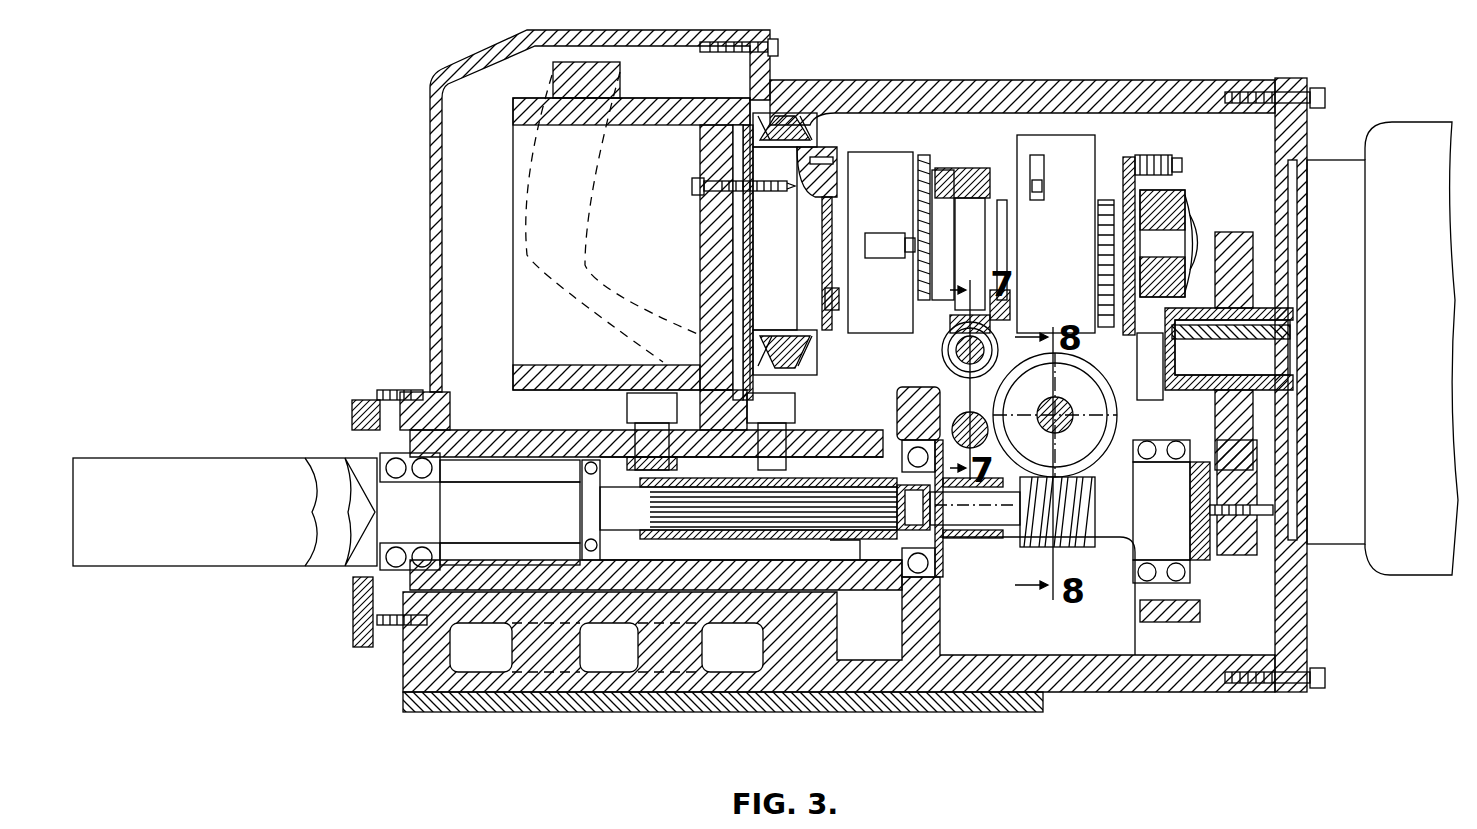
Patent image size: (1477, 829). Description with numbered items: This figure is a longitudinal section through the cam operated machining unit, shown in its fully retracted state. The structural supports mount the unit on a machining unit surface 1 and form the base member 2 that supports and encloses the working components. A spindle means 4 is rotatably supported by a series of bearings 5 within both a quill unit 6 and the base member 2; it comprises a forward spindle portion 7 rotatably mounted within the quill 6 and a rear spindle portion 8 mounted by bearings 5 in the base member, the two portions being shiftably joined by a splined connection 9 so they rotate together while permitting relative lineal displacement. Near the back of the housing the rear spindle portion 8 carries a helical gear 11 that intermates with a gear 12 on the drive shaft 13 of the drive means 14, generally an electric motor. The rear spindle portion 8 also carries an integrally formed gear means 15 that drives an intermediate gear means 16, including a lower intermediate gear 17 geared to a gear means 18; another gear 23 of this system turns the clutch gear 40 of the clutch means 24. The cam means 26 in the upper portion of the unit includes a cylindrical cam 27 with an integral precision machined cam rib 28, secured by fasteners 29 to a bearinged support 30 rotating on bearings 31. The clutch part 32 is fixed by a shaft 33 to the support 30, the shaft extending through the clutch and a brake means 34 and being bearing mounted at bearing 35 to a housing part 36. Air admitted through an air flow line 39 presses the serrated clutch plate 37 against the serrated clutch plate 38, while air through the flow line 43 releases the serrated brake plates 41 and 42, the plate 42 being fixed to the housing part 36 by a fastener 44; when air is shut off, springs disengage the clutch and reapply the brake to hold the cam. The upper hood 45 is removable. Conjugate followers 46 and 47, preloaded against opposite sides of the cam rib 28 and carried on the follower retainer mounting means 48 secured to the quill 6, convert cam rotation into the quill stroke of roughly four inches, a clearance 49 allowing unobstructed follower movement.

The machining unit surface 1 is at (645, 712).
The base member 2 is at (1100, 680).
The spindle means 4 is at (330, 578).
The bearings 5 is at (435, 552).
The quill unit 6 is at (540, 450).
The forward spindle portion 7 is at (500, 472).
The rear spindle portion 8 is at (1005, 545).
The splined connection 9 is at (648, 500).
The helical gear 11 is at (1228, 555).
The gear 12 is at (1230, 230).
The drive shaft 13 is at (1170, 362).
The drive means 14 is at (1375, 598).
The gear means 15 is at (1092, 545).
The intermediate gear means 16 is at (975, 395).
The lower intermediate gear 17 is at (1092, 375).
The gear means 18 is at (978, 428).
The gear 23 is at (945, 330).
The clutch means 24 is at (932, 172).
The cam means 26 is at (572, 211).
The cam 27 is at (513, 190).
The cam rib 28 is at (575, 80).
The fasteners 29 is at (692, 186).
The bearinged support 30 is at (795, 251).
The bearings 31 is at (818, 133).
The clutch part 32 is at (875, 152).
The shaft 33 is at (825, 287).
The brake means 34 is at (1060, 132).
The bearing 35 is at (1180, 200).
The housing part 36 is at (1165, 152).
The serrated clutch plate 37 is at (916, 200).
The serrated clutch plate 38 is at (930, 208).
The air flow line 39 is at (890, 258).
The clutch gear 40 is at (965, 168).
The serrated brake plate 41 is at (1100, 288).
The serrated brake plate 42 is at (1100, 264).
The air flow line 43 is at (1045, 204).
The fastener 44 is at (1182, 162).
The upper hood 45 is at (430, 182).
The conjugate follower 46 is at (632, 410).
The conjugate follower 47 is at (780, 410).
The follower retainer mounting means 48 is at (710, 440).
The clearance 49 is at (455, 405).